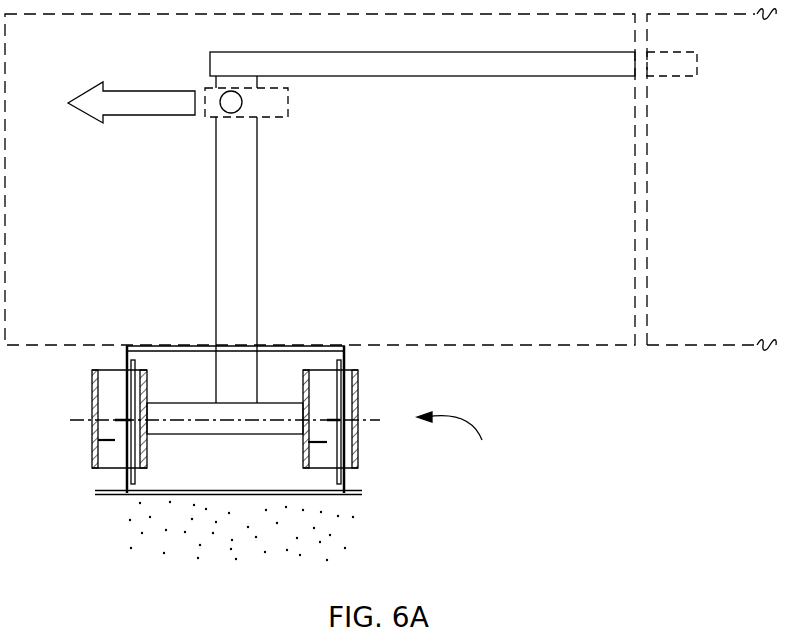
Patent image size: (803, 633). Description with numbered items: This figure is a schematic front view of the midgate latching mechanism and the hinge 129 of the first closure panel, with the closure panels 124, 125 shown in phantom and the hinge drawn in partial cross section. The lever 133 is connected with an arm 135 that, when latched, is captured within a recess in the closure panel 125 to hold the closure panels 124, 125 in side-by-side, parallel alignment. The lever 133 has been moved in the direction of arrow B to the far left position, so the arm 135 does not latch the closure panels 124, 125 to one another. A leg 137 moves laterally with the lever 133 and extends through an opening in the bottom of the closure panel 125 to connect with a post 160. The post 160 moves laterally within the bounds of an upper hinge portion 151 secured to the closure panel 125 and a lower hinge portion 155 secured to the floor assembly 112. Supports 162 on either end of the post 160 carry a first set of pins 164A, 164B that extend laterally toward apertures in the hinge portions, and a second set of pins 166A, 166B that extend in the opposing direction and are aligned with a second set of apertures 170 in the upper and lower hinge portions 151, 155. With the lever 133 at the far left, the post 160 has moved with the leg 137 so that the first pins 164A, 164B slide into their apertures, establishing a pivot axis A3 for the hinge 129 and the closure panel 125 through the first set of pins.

The floor assembly 112 is at (370, 558).
The closure panel 124 is at (695, 348).
The closure panel 125 is at (560, 348).
The hinge 129 is at (462, 439).
The lever 133 is at (229, 91).
The arm 135 is at (380, 77).
The leg 137 is at (215, 244).
The upper hinge portion 151 is at (138, 357).
The lower hinge portion 155 is at (338, 490).
The post 160 is at (178, 436).
The supports 162 is at (93, 372).
The first pin 164A is at (125, 418).
The first pin 164B is at (353, 413).
The second pin 166A is at (110, 440).
The second pin 166B is at (320, 442).
The second set of apertures 170 is at (128, 443).
The pivot axis A3 is at (380, 421).
The direction arrow B is at (128, 116).